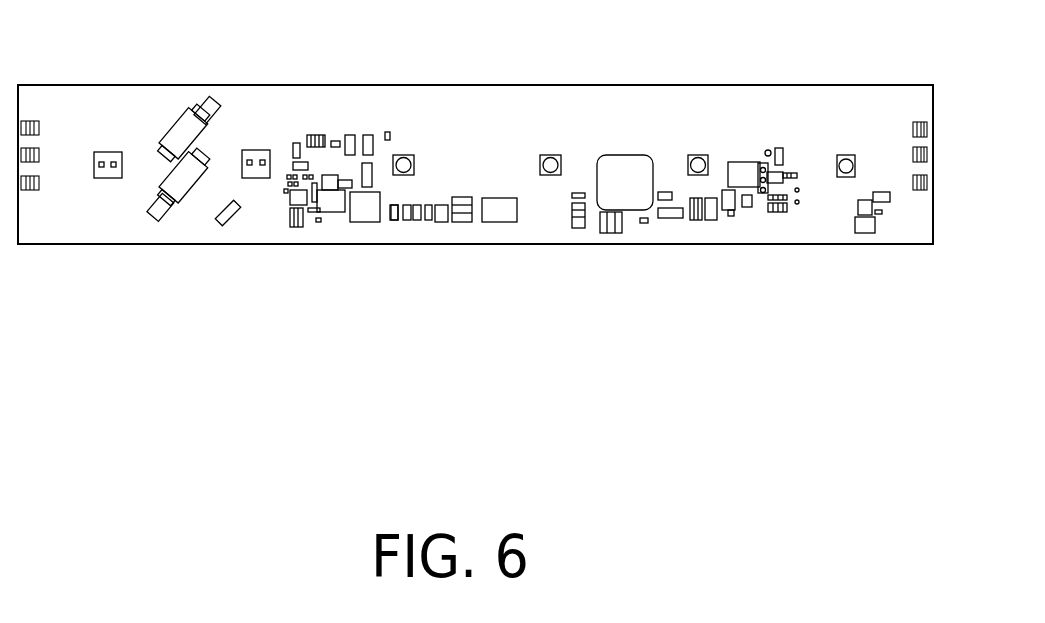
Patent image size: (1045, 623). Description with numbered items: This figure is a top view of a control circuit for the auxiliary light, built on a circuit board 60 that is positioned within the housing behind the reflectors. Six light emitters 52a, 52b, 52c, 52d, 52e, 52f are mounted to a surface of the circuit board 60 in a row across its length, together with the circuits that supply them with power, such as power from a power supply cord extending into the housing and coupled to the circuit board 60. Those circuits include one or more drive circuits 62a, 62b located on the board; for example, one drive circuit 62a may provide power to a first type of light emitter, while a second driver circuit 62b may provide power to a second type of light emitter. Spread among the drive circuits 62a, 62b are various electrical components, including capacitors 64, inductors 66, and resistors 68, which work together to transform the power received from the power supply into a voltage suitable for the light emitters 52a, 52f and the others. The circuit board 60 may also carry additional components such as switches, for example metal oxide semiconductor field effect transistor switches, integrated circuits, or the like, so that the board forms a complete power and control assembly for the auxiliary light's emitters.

The light emitter 52a is at (108, 158).
The light emitter 52b is at (258, 162).
The light emitter 52c is at (405, 160).
The light emitter 52d is at (550, 160).
The light emitter 52e is at (700, 160).
The light emitter 52f is at (848, 160).
The circuit board 60 is at (526, 245).
The drive circuit 62a is at (302, 198).
The driver circuit 62b is at (757, 206).
The capacitor 64 is at (443, 222).
The inductor 66 is at (630, 200).
The resistor 68 is at (335, 139).